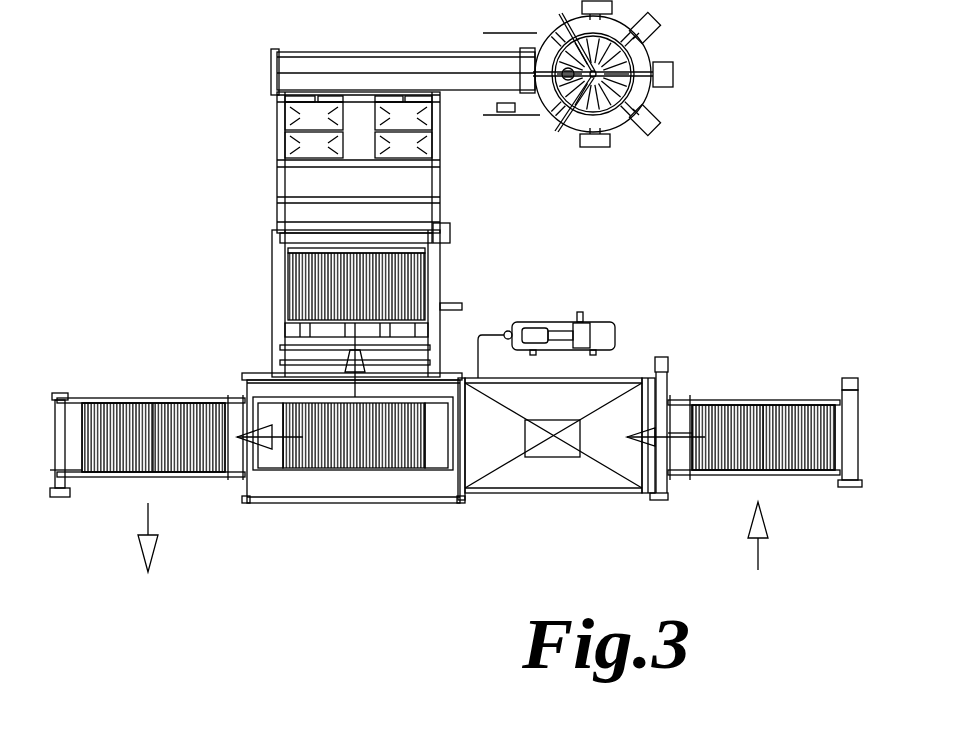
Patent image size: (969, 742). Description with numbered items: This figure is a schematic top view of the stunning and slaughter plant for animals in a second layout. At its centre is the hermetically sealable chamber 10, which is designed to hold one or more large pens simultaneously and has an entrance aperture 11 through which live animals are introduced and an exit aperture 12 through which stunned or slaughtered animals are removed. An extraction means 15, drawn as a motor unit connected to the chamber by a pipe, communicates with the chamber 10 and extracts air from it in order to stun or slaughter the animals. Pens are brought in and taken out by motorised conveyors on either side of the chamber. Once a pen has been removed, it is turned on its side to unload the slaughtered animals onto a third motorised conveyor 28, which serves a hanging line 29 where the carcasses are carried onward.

The hermetically sealable chamber 10 is at (545, 495).
The entrance aperture 11 is at (680, 410).
The exit aperture 12 is at (460, 432).
The extraction means 15 is at (606, 322).
The third motorised conveyor 28 is at (300, 280).
The hanging line 29 is at (490, 135).